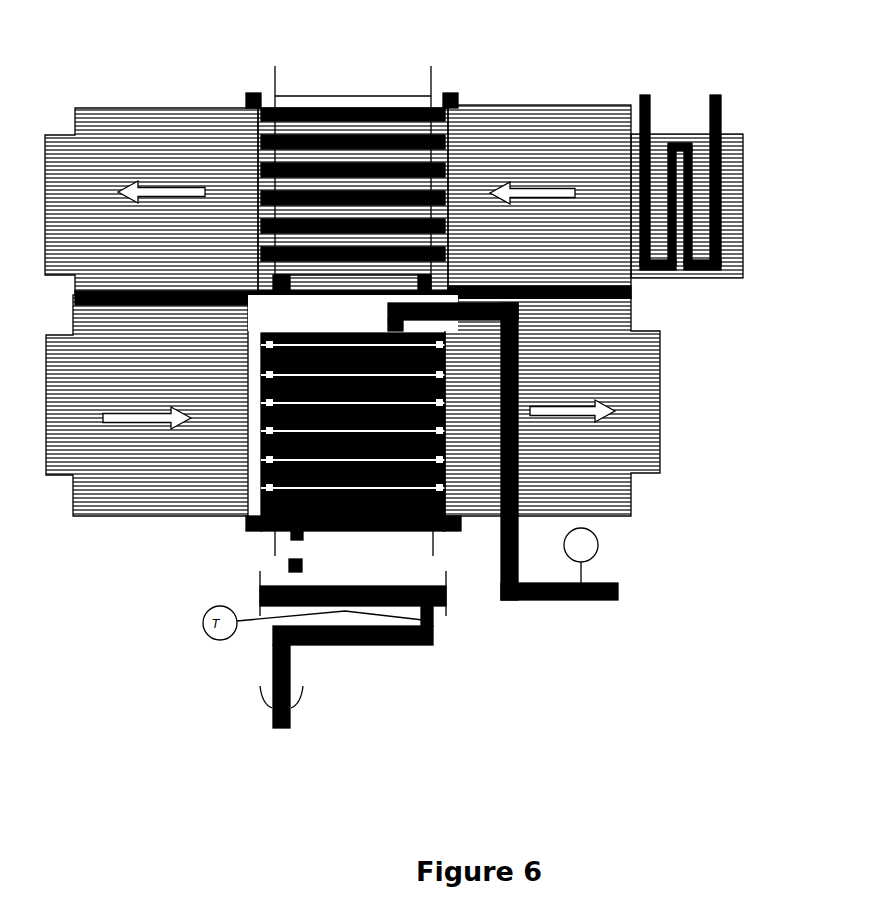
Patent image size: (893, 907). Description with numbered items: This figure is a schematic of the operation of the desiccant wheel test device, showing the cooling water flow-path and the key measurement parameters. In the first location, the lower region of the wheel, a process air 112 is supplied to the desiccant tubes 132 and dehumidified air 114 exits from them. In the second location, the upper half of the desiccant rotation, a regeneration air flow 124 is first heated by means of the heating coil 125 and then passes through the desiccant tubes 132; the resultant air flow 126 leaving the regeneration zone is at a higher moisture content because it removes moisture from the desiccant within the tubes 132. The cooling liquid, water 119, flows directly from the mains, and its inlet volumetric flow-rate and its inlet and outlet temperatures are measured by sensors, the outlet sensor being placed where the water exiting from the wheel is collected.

The process air 112 is at (147, 405).
The dehumidified air 114 is at (552, 407).
The cooling liquid (water) 119 is at (480, 565).
The regeneration air flow 124 is at (539, 201).
The heating coil 125 is at (687, 184).
The resultant air flow 126 is at (151, 206).
The desiccant tubes 132 is at (322, 54).